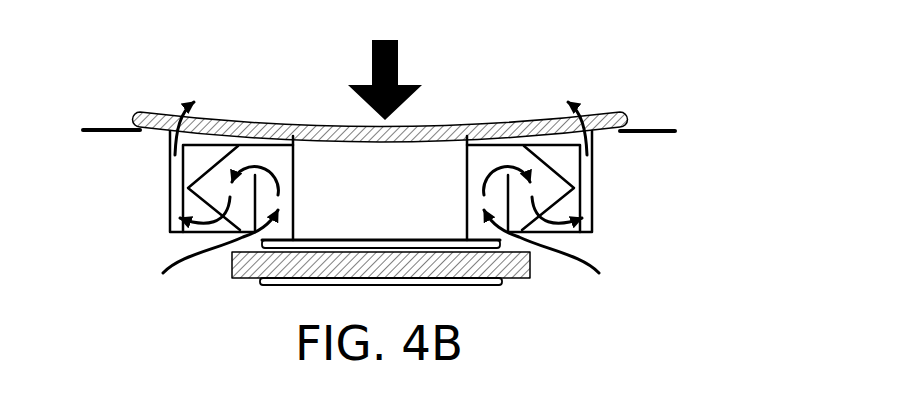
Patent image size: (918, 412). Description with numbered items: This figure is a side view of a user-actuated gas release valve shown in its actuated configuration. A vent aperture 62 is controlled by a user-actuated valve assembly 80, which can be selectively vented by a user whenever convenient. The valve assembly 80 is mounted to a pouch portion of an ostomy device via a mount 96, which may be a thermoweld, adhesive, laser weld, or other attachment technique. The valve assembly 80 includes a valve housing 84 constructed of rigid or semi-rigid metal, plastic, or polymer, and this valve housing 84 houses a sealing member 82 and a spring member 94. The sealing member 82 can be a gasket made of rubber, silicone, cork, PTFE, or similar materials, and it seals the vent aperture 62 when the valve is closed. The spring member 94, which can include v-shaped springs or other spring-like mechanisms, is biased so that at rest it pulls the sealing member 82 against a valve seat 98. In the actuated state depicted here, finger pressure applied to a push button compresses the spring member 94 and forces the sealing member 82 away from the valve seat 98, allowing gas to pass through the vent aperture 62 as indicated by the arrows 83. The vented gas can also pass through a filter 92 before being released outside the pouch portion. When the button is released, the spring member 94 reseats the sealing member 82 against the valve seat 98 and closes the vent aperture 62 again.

The valve assembly 80 is at (720, 178).
The filter 92 is at (502, 127).
The mount 96 is at (648, 127).
The vent aperture 62 is at (177, 184).
The valve seat 98 is at (168, 218).
The spring member 94 is at (563, 177).
The valve housing 84 is at (294, 195).
The sealing member 82 is at (248, 280).
The arrows 83 is at (582, 110).